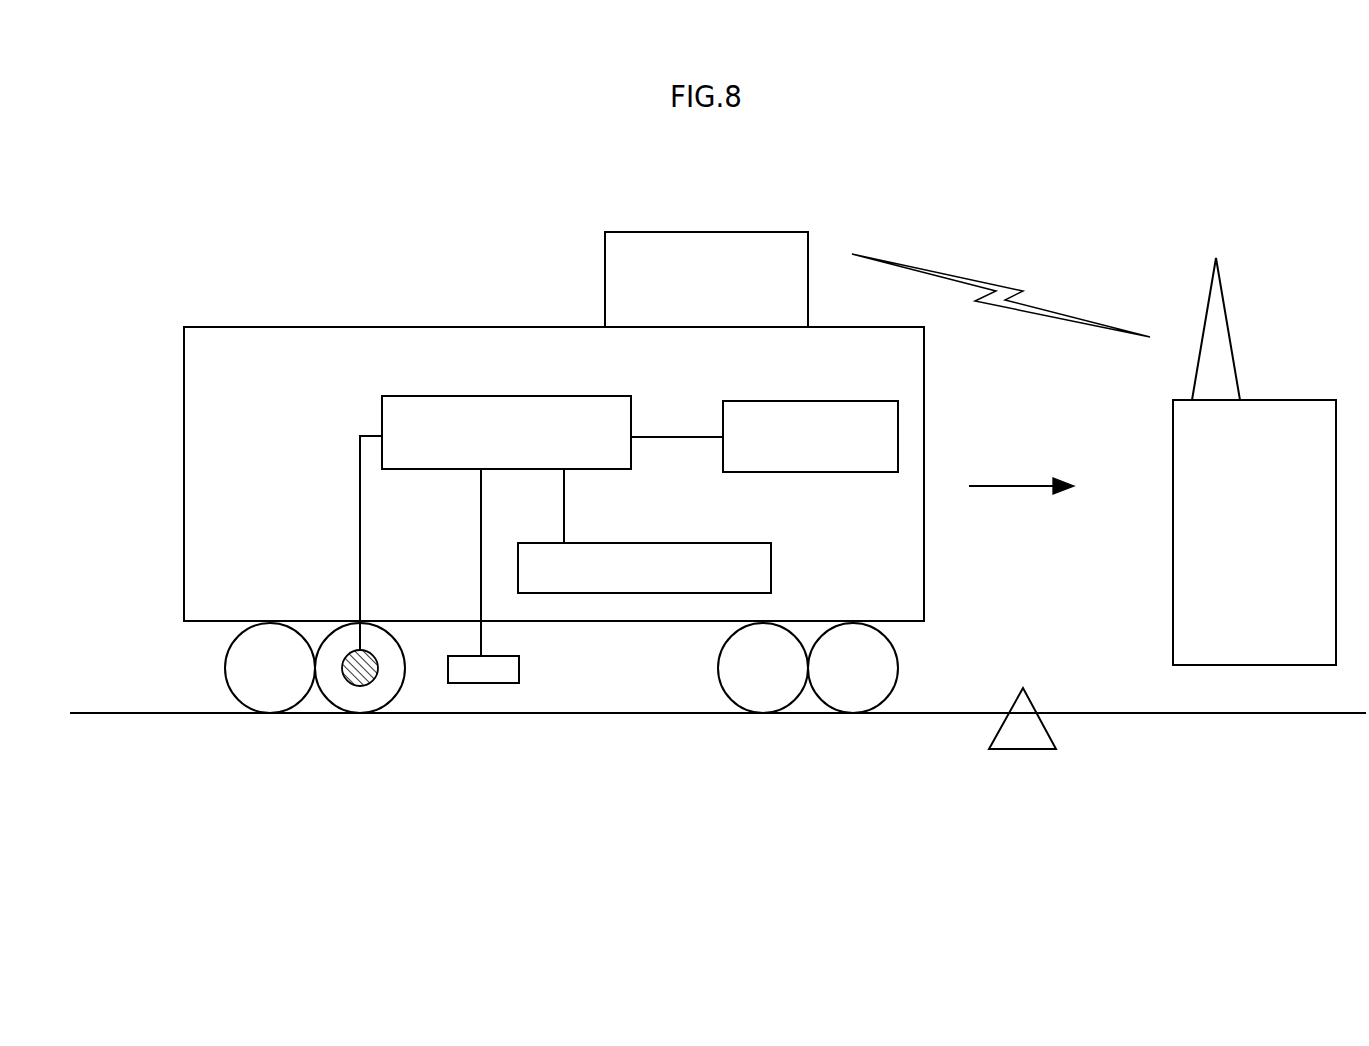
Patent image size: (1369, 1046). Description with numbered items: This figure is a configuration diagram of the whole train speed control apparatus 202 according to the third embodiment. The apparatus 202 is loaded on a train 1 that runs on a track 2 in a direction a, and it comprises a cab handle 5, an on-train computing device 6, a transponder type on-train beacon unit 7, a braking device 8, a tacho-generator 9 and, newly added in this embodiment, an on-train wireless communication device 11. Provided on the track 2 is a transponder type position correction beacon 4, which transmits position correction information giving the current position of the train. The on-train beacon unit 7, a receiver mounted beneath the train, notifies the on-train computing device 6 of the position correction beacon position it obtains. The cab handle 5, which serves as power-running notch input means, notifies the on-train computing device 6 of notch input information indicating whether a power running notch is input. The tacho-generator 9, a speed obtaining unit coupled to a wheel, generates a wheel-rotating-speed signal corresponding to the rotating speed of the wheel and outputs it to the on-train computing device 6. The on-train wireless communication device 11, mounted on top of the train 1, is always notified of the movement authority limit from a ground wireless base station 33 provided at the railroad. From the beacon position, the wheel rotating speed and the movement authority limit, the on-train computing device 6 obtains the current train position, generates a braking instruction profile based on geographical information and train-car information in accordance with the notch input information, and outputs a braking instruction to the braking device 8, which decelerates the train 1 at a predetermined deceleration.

The train 1 is at (267, 327).
The track 2 is at (157, 713).
The transponder type position correction beacon 4 is at (1030, 750).
The cab handle 5 is at (851, 401).
The on-train computing device 6 is at (435, 396).
The transponder type on-train beacon unit 7 is at (505, 684).
The braking device 8 is at (617, 595).
The tacho-generator 9 is at (350, 684).
The on-train wireless communication device 11 is at (758, 232).
The ground wireless base station 33 is at (1283, 400).
The train speed control apparatus 202 is at (722, 172).
The direction a is at (1019, 482).